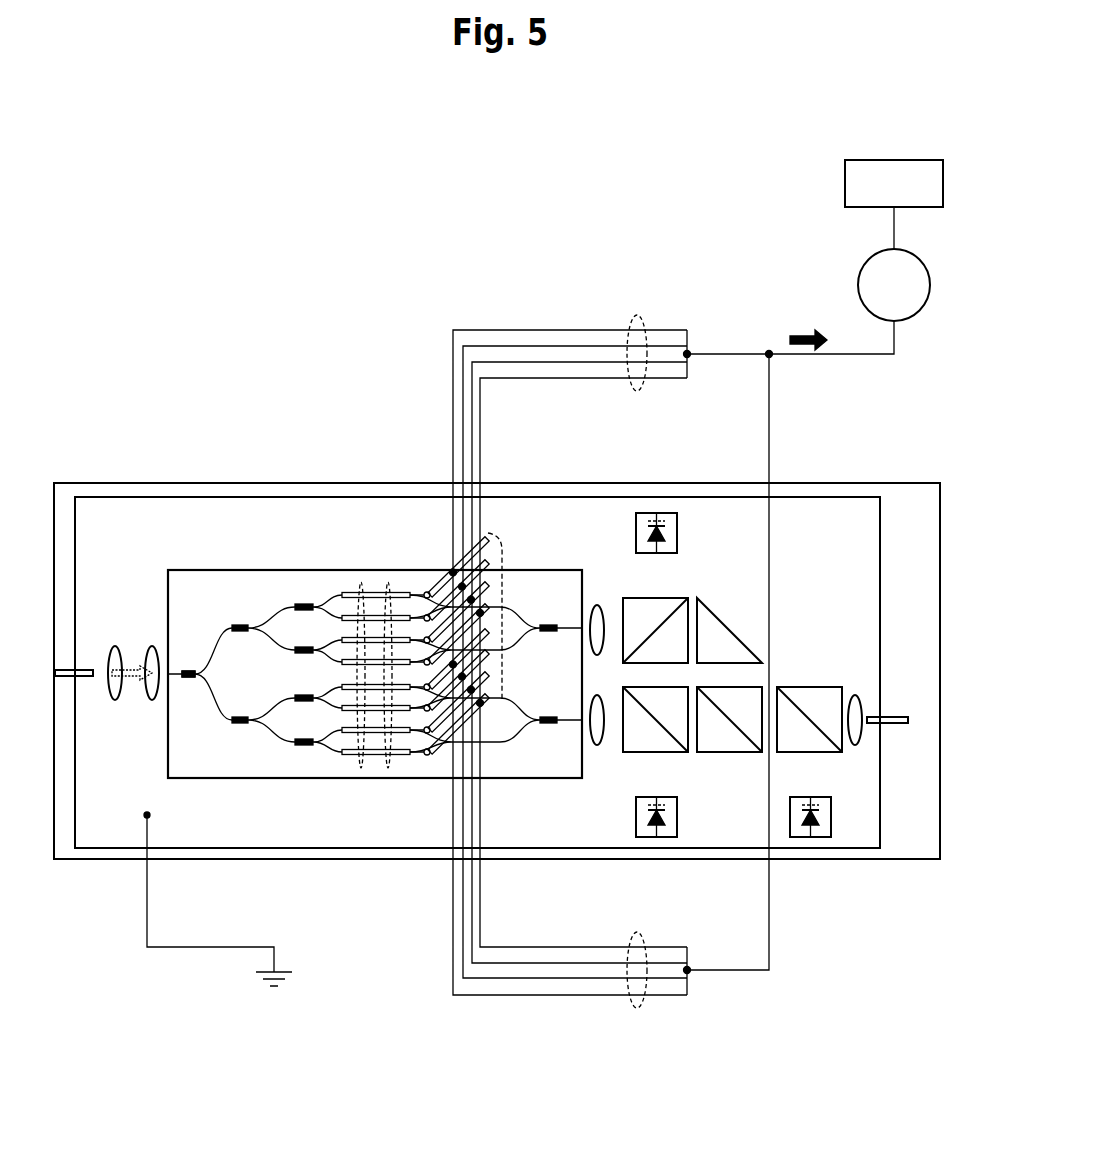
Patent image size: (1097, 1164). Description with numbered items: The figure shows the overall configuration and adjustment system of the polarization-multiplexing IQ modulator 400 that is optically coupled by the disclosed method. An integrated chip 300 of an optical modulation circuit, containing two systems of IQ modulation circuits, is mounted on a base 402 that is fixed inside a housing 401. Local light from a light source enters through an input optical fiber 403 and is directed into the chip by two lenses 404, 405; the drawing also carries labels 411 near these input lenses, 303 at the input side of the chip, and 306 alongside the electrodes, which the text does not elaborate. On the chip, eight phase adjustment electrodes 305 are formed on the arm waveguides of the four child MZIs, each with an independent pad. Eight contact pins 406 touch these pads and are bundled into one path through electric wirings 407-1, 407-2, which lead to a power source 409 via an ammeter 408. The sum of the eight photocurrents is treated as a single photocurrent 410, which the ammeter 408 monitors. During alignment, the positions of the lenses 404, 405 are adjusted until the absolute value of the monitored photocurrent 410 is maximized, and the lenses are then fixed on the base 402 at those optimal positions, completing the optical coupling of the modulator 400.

The polarization-multiplexing IQ modulator 400 is at (492, 155).
The housing 401 is at (108, 483).
The base 402 is at (190, 497).
The input optical fiber 403 is at (88, 668).
The lens 404 is at (118, 703).
The lens 405 is at (153, 703).
The input light 411 is at (143, 658).
The integrated chip 300 is at (264, 569).
The optical splitter 303 is at (186, 680).
The phase adjustment electrodes 305 is at (388, 779).
The phase shifter electrode 306 is at (357, 779).
The contact pins 406 is at (500, 541).
The electric wiring 407-1 is at (634, 318).
The electric wiring 407-2 is at (634, 935).
The ammeter 408 is at (862, 268).
The power source 409 is at (845, 181).
The photocurrent 410 is at (801, 330).